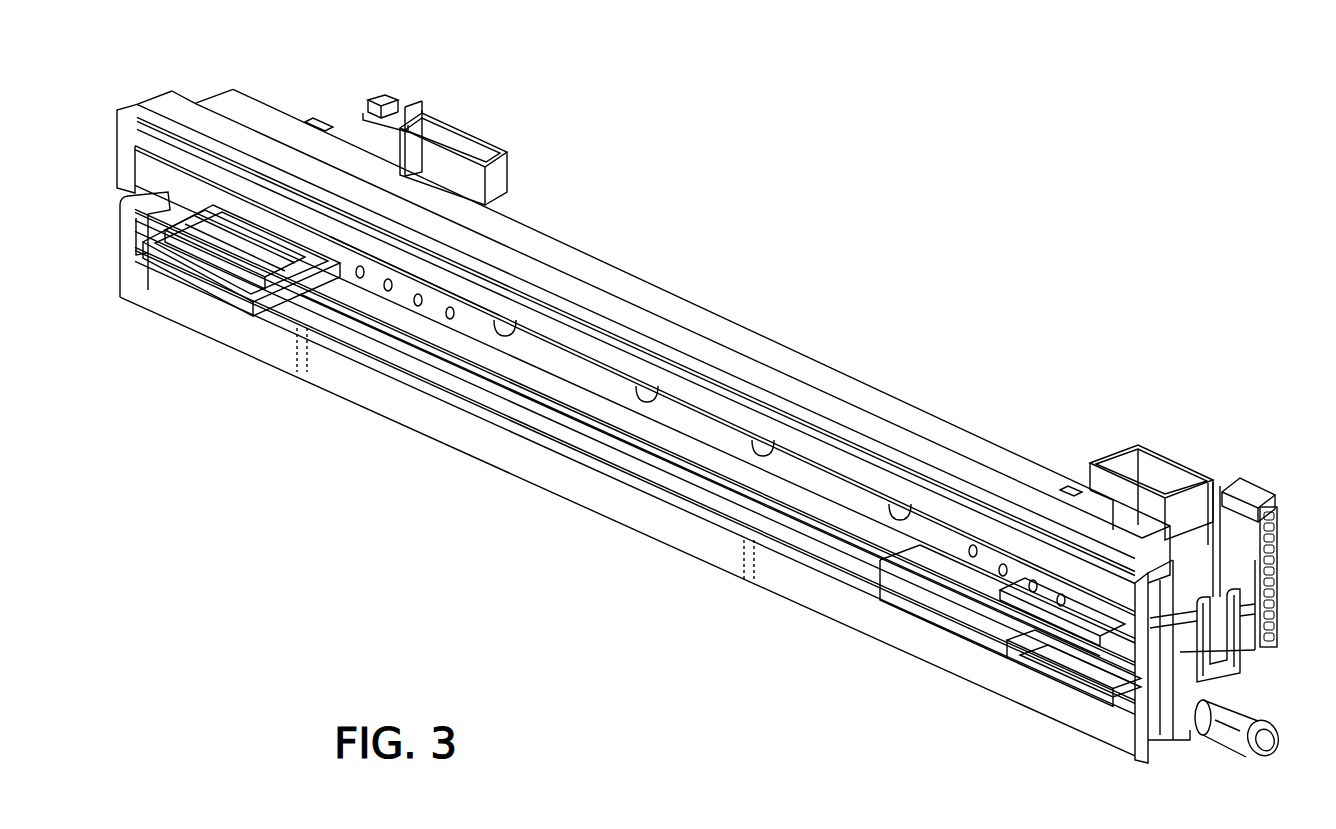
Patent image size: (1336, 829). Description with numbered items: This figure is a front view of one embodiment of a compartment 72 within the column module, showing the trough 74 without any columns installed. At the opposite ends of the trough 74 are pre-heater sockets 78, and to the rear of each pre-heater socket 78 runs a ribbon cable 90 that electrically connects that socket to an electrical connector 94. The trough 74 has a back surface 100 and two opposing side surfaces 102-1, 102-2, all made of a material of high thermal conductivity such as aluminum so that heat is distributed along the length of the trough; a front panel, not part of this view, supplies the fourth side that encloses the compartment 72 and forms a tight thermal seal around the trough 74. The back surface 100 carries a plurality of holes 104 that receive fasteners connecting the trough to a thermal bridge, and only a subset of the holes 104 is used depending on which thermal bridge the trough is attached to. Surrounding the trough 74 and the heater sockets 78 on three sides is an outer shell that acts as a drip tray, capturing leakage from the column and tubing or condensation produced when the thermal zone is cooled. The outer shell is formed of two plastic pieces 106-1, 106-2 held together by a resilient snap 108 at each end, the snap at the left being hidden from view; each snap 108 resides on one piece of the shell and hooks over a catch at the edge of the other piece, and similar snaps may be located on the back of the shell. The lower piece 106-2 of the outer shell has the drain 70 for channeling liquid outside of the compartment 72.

The drain 70 is at (1266, 738).
The compartment 72 is at (942, 238).
The trough 74 is at (400, 347).
The pre-heater socket 78 is at (225, 258).
The ribbon cable 90 is at (447, 143).
The electrical connector 94 is at (383, 103).
The back surface 100 is at (708, 430).
The side surface 102-1 is at (380, 280).
The side surface 102-2 is at (920, 595).
The holes 104 is at (650, 386).
The outer shell piece 106-1 is at (673, 321).
The lower piece of the outer shell 106-2 is at (512, 456).
The resilient snap 108 is at (1245, 660).